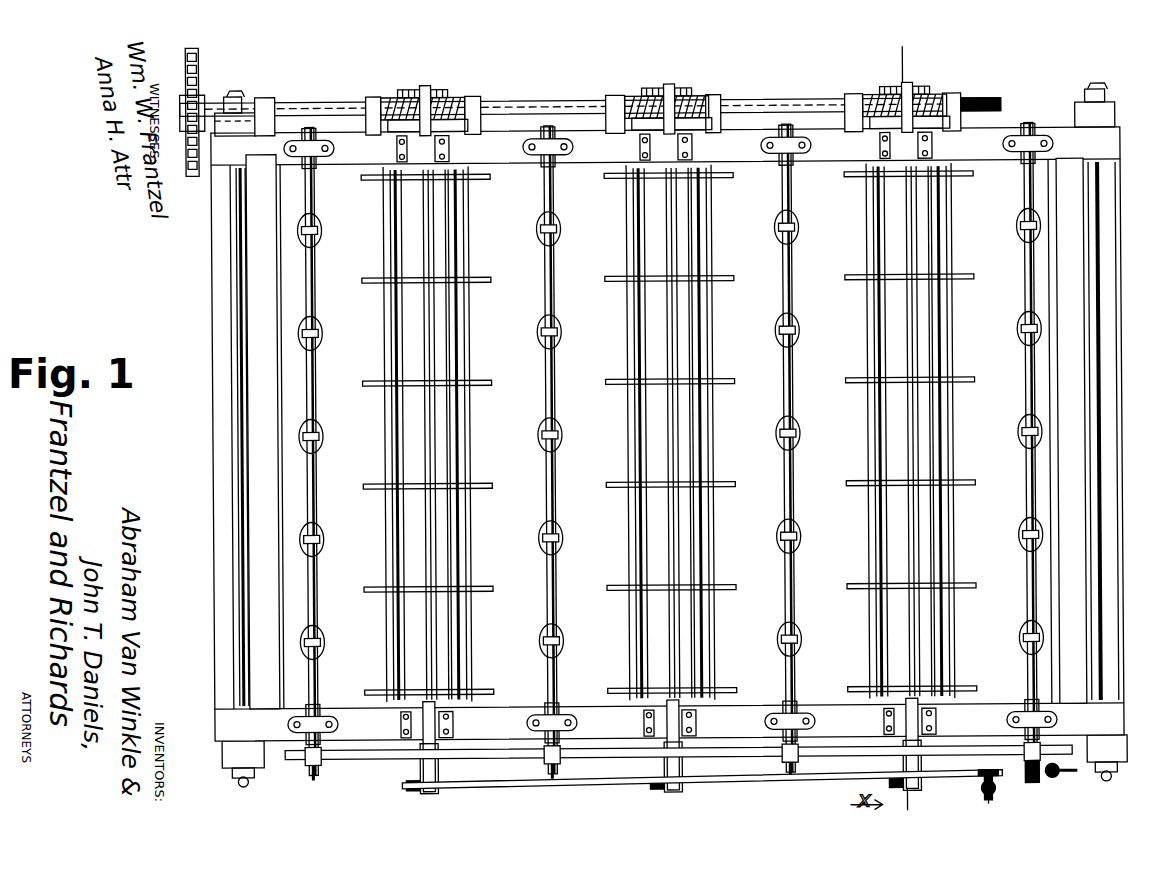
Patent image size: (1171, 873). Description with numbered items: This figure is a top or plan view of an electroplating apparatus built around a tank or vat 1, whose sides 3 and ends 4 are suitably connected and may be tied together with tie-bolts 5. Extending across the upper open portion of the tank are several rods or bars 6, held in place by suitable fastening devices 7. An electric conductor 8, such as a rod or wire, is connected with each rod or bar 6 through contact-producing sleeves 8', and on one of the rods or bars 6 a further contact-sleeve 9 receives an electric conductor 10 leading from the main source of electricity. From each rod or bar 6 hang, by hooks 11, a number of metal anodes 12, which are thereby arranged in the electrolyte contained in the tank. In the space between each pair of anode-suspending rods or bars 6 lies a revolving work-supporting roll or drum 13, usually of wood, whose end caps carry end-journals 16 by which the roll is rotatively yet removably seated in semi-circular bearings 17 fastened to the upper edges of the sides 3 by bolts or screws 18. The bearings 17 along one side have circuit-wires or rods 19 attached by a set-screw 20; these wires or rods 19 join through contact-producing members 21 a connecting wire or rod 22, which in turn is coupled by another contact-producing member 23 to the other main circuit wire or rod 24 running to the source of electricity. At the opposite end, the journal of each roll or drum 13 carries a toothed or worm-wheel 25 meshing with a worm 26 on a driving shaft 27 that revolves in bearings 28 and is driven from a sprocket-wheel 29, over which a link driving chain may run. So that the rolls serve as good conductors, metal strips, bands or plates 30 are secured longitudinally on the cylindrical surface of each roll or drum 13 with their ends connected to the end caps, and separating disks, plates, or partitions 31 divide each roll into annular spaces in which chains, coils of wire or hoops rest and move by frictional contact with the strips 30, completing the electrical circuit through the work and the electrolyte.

The tank or vat 1 is at (650, 556).
The sides 3 is at (1005, 128).
The ends 4 is at (262, 253).
The tie-bolts 5 is at (240, 290).
The rods or bars 6 is at (316, 280).
The fastening devices 7 is at (318, 152).
The electric conductor 8 is at (678, 772).
The contact-producing sleeves 8' is at (661, 756).
The contact-sleeve 9 is at (1024, 782).
The electric conductor 10 is at (1052, 779).
The hooks 11 is at (320, 228).
The metal anodes 12 is at (322, 236).
The work-supporting roll or drum 13 is at (410, 408).
The end-journal 16 is at (428, 86).
The semi-circular bearings 17 is at (452, 148).
The bolts or screws 18 is at (400, 156).
The circuit-wires or rods 19 is at (416, 762).
The set-screw 20 is at (400, 722).
The contact-producing members 21 is at (418, 790).
The connecting wire or rod 22 is at (512, 786).
The contact-producing member 23 is at (983, 776).
The main circuit wire or rod 24 is at (979, 792).
The toothed or worm-wheel 25 is at (470, 94).
The worm 26 is at (447, 92).
The driving shaft 27 is at (185, 110).
The bearings 28 is at (268, 100).
The sprocket-wheel 29 is at (202, 60).
The metal strips, bands or plates 30 is at (448, 255).
The separating disks, plates, or partitions 31 is at (470, 176).